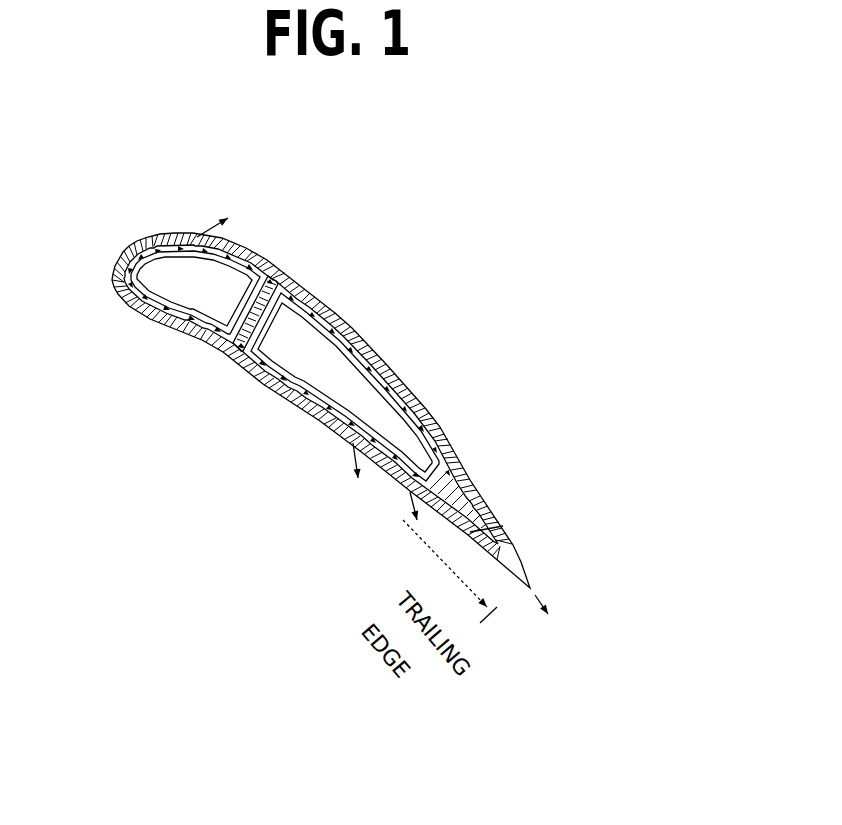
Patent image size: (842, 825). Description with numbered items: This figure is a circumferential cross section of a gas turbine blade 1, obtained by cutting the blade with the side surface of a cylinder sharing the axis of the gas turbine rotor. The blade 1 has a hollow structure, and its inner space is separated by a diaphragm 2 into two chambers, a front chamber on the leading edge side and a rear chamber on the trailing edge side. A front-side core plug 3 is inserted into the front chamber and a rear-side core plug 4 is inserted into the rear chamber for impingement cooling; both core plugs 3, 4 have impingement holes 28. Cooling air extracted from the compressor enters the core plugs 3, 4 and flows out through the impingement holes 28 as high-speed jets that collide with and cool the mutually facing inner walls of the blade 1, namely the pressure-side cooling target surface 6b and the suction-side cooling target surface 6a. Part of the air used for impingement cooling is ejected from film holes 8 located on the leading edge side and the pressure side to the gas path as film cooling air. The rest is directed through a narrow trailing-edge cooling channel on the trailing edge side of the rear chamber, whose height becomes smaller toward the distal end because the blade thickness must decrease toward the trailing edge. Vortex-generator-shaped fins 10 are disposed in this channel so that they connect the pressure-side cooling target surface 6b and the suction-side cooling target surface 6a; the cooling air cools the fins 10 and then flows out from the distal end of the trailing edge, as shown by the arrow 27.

The gas turbine blade 1 is at (487, 260).
The diaphragm 2 is at (220, 352).
The front-side core plug 3 is at (247, 243).
The rear-side core plug 4 is at (340, 317).
The suction-side cooling target surface 6a is at (410, 383).
The pressure-side cooling target surface 6b is at (263, 380).
The film holes 8 is at (197, 233).
The vortex-generator-shaped fins 10 is at (503, 523).
The arrow 27 is at (537, 593).
The impingement holes 28 is at (139, 307).